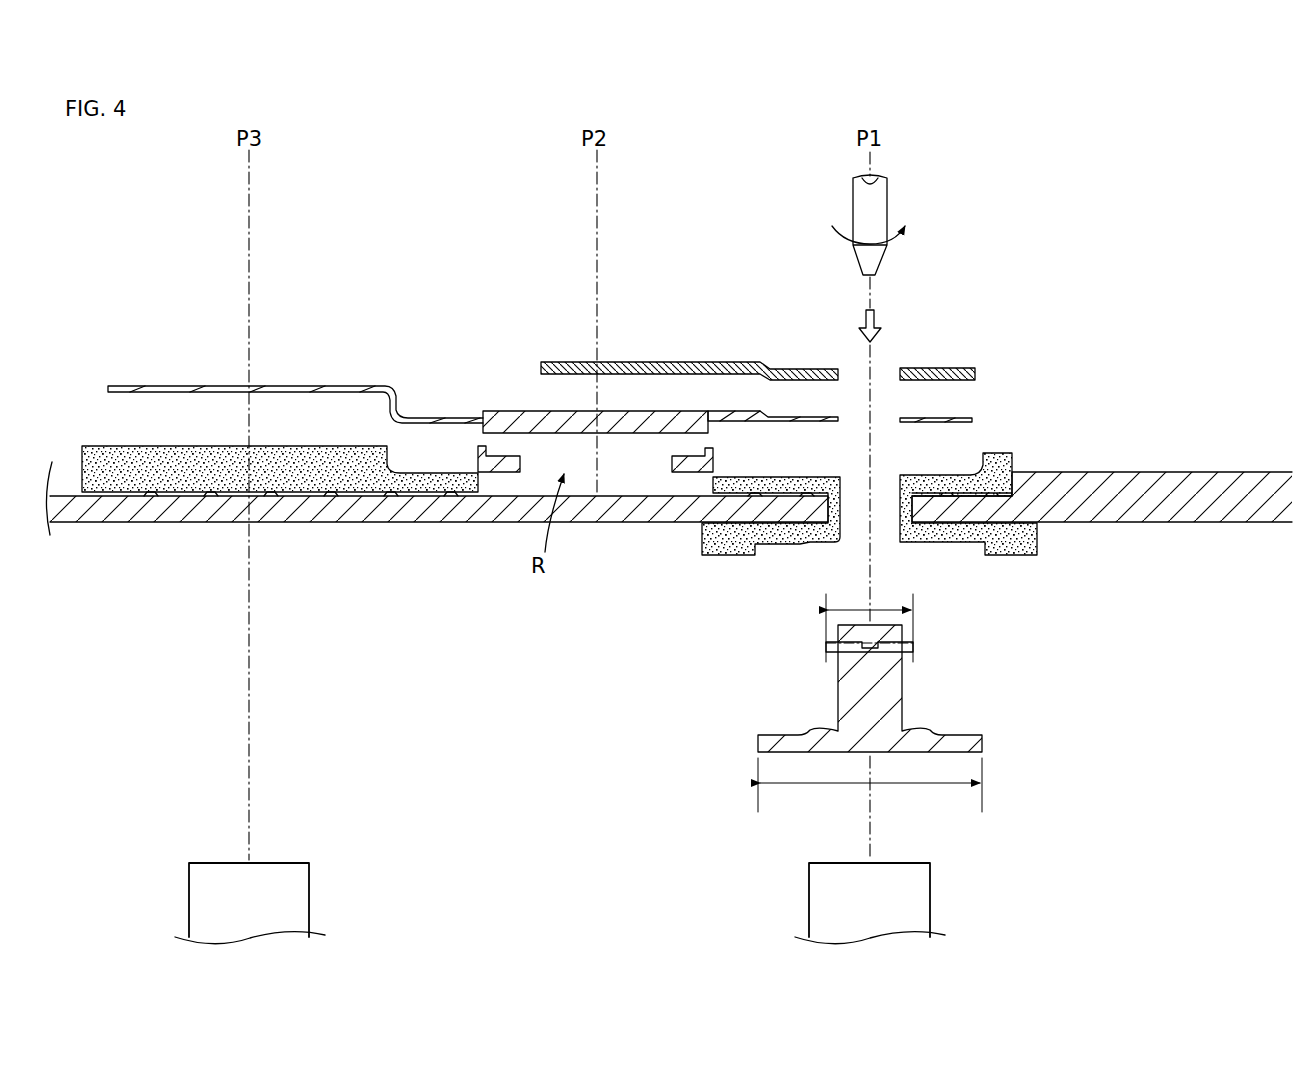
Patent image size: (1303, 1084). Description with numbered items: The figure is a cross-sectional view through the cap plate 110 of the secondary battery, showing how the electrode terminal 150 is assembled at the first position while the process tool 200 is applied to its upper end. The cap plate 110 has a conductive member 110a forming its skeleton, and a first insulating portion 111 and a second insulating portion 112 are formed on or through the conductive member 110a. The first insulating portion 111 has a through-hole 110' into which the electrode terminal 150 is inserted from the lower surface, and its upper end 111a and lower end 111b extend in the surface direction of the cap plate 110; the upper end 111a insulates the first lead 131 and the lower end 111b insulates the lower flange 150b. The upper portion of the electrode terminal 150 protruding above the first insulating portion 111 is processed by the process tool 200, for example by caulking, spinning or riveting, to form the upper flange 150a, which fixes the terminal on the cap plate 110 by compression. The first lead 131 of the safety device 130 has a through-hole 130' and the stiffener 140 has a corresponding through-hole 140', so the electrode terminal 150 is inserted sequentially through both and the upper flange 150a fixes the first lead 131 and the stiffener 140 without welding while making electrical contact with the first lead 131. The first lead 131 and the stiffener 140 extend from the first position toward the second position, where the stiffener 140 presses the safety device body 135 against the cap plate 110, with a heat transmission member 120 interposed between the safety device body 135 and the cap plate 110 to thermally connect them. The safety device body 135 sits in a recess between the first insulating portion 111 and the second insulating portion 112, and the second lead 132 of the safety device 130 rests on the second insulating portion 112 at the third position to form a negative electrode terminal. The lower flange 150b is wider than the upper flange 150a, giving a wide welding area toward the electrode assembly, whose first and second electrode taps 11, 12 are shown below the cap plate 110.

The first electrode tap 11 is at (917, 897).
The second electrode tap 12 is at (296, 897).
The cap plate 110 is at (669, 453).
The conductive member 110a is at (1226, 506).
The through-hole 110' is at (849, 475).
The first insulating portion 111 is at (738, 566).
The upper end of the first insulating portion 111a is at (1005, 462).
The lower end of the first insulating portion 111b is at (1030, 539).
The second insulating portion 112 is at (322, 474).
The heat transmission member 120 is at (688, 474).
The safety device 130 is at (456, 359).
The through-hole of the first lead 130' is at (914, 405).
The first lead 131 is at (965, 417).
The second lead 132 is at (200, 388).
The safety device body 135 is at (511, 412).
The stiffener 140 is at (689, 347).
The through-hole of the stiffener 140' is at (937, 352).
The electrode terminal 150 is at (909, 698).
The upper flange 150a is at (913, 650).
The lower flange 150b is at (966, 742).
The process tool 200 is at (878, 200).